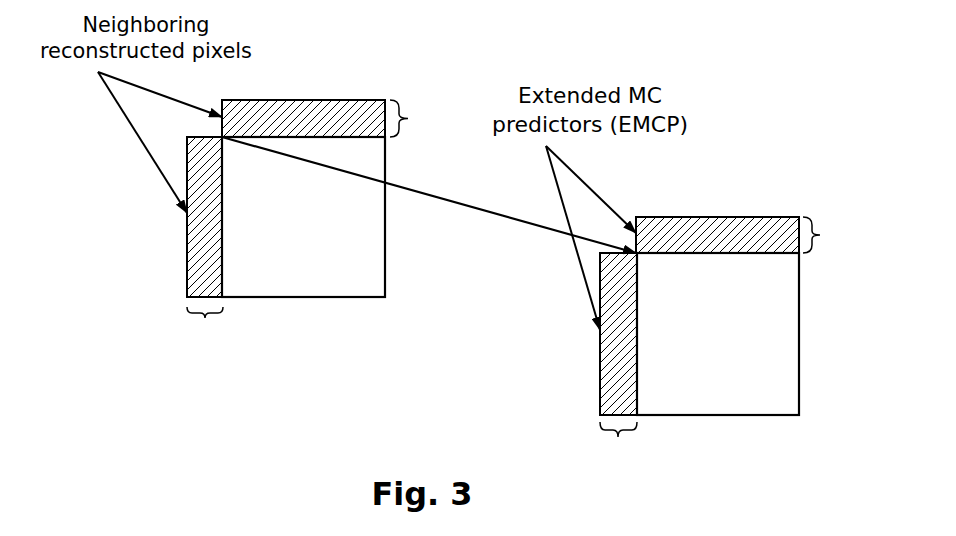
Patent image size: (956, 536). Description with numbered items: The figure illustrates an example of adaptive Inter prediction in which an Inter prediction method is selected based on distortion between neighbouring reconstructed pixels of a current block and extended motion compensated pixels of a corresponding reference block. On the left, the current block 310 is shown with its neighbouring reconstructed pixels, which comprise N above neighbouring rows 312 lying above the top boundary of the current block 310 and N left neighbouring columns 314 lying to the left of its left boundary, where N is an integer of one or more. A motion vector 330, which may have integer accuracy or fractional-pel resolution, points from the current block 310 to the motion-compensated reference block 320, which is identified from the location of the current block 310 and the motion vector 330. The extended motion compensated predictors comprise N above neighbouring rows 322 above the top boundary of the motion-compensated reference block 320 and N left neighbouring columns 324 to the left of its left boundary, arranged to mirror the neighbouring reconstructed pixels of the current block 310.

The current block 310 is at (384, 262).
The above neighbouring rows 312 is at (323, 100).
The left neighbouring columns 314 is at (187, 262).
The motion-compensated reference block 320 is at (730, 415).
The above neighbouring rows 322 is at (723, 217).
The left neighbouring columns 324 is at (600, 388).
The motion vector 330 is at (445, 200).